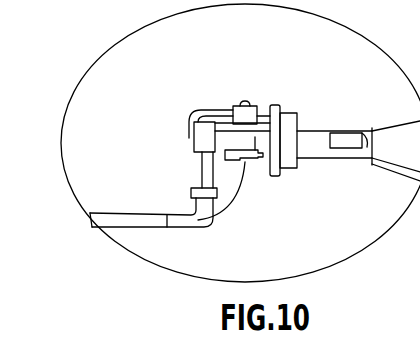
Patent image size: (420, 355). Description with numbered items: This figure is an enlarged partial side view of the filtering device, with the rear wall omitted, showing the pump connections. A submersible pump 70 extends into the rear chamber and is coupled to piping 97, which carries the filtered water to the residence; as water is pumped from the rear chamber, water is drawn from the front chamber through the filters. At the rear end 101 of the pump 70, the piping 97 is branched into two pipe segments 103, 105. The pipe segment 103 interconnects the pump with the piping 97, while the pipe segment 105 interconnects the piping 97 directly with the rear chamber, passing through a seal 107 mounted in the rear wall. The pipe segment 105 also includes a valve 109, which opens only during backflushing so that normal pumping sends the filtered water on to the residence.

The submersible pump 70 is at (384, 125).
The piping 97 is at (200, 176).
The rear end 101 is at (371, 164).
The pipe segment 103 is at (256, 159).
The pipe segment 105 is at (222, 113).
The seal 107 is at (289, 168).
The valve 109 is at (250, 102).